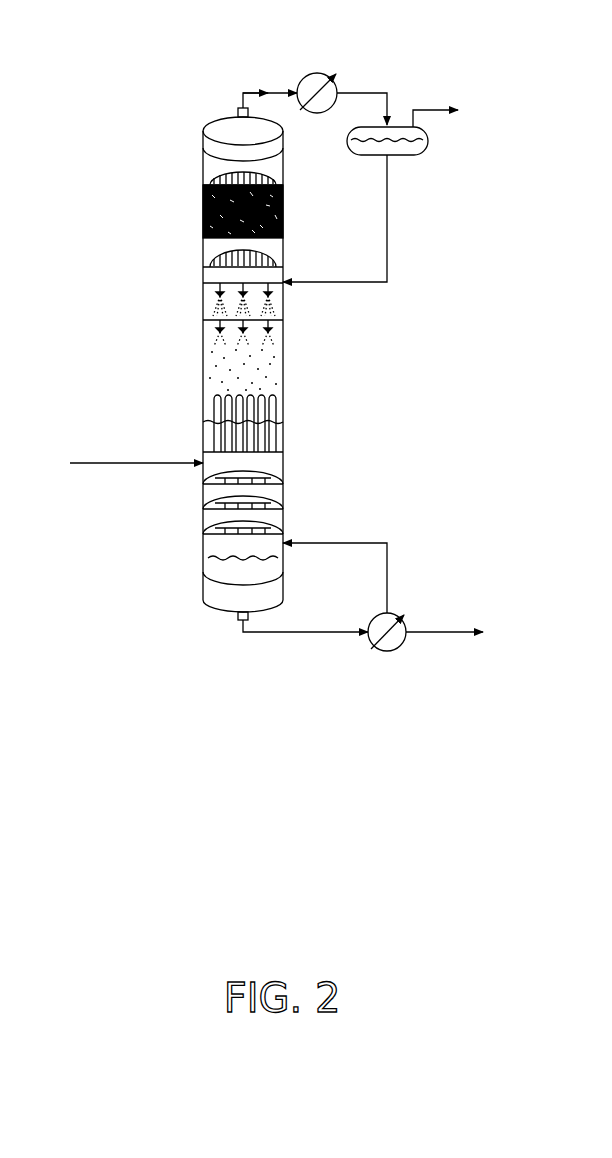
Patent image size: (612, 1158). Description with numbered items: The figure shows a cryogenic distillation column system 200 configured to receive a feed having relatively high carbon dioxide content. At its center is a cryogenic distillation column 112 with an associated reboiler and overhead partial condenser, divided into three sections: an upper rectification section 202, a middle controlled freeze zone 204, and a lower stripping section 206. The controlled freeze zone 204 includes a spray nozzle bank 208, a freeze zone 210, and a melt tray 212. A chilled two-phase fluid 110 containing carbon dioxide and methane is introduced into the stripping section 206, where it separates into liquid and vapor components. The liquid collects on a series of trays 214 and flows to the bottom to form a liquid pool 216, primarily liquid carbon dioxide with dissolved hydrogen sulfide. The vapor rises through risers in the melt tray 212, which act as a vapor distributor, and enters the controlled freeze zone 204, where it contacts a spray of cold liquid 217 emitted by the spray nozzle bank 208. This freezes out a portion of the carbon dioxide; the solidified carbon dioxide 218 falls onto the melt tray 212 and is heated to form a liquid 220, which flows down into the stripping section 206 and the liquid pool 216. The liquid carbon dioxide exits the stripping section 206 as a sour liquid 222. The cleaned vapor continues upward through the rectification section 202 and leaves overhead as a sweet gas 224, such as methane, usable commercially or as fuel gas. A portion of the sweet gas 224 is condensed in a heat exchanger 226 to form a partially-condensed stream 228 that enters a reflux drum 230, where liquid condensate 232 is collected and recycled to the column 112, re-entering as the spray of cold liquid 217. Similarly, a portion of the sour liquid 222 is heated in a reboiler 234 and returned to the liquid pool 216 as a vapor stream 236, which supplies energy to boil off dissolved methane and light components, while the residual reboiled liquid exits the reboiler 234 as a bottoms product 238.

The cryogenic distillation column system 200 is at (258, 966).
The cryogenic distillation column 112 is at (172, 75).
The chilled two-phase fluid 110 is at (100, 463).
The rectification section 202 is at (196, 150).
The controlled freeze zone 204 is at (196, 470).
The stripping section 206 is at (250, 522).
The spray nozzle bank 208 is at (235, 290).
The freeze zone 210 is at (305, 352).
The melt tray 212 is at (294, 435).
The trays 214 is at (292, 472).
The liquid pool 216 is at (270, 573).
The spray of cold liquid 217 is at (212, 312).
The solidified CO2 218 is at (257, 360).
The liquid CO2 220 is at (292, 395).
The sour liquid 222 is at (303, 640).
The sweet gas 224 is at (265, 90).
The heat exchanger 226 is at (318, 73).
The partially-condensed stream 228 is at (390, 100).
The reflux drum 230 is at (365, 157).
The liquid condensate 232 is at (315, 278).
The reboiler 234 is at (397, 651).
The vapor stream 236 is at (390, 555).
The bottoms product 238 is at (442, 628).